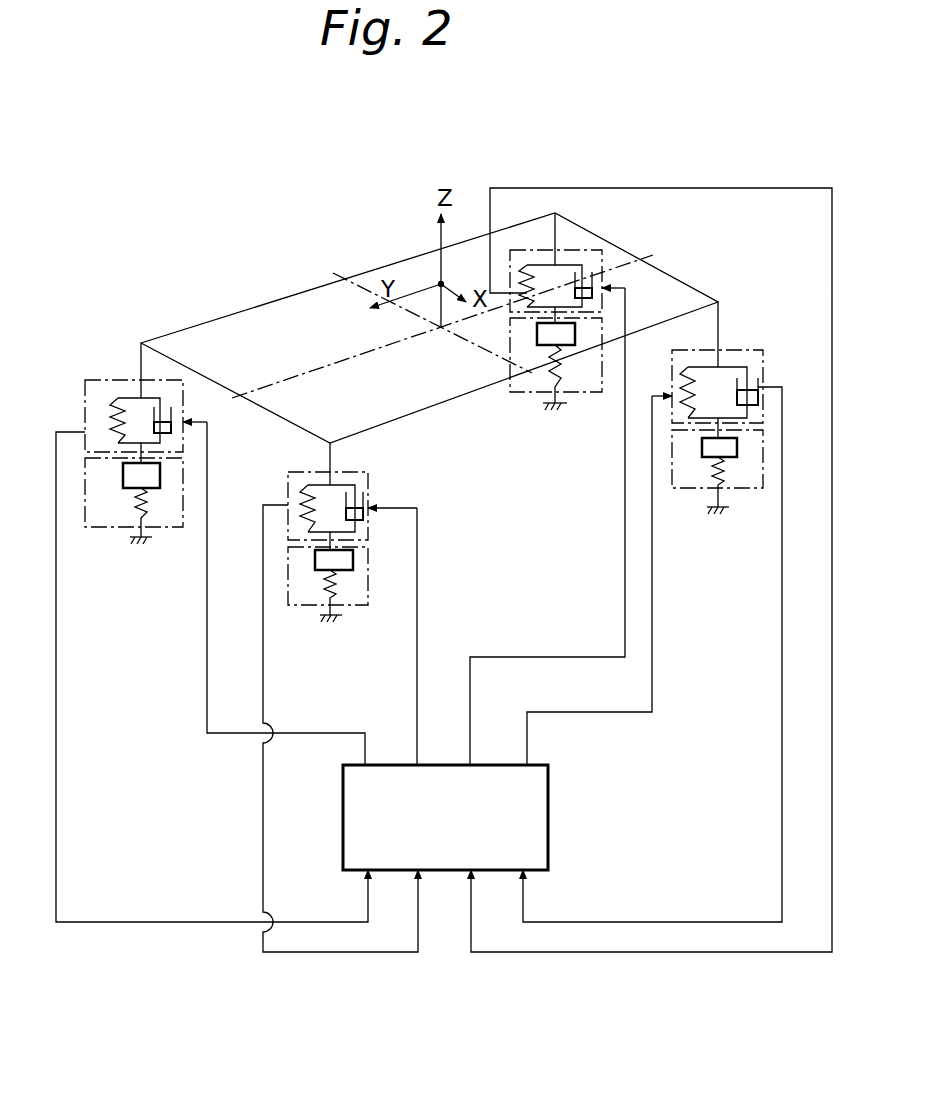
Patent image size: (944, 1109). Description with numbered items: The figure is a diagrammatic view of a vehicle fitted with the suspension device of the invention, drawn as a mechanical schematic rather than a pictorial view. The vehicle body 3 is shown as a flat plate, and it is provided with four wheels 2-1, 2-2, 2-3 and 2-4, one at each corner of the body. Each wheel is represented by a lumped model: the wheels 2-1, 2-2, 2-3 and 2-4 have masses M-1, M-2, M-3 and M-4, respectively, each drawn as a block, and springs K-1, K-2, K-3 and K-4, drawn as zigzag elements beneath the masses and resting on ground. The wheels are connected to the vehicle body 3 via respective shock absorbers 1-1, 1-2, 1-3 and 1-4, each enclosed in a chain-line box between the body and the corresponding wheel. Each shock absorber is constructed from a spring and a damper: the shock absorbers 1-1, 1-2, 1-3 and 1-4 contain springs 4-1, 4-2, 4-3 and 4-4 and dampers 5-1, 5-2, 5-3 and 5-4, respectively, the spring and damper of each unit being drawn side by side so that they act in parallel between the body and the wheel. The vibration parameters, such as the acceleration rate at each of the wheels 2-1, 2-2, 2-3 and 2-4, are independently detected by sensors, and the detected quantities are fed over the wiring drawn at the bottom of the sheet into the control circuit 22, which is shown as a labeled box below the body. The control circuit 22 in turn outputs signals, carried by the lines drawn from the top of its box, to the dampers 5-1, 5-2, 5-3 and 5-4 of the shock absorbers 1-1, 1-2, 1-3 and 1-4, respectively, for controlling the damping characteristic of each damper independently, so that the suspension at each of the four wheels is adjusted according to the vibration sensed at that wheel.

The vehicle body 3 is at (276, 300).
The control circuit 22 is at (548, 812).
The shock absorber 1-1 is at (85, 407).
The shock absorber 1-2 is at (368, 478).
The shock absorber 1-3 is at (588, 250).
The shock absorber 1-4 is at (787, 378).
The wheel 2-1 is at (85, 470).
The wheel 2-2 is at (368, 587).
The wheel 2-3 is at (510, 392).
The wheel 2-4 is at (748, 490).
The spring 4-1 is at (115, 402).
The spring 4-2 is at (303, 507).
The spring 4-3 is at (527, 267).
The spring 4-4 is at (700, 378).
The damper 5-1 is at (172, 433).
The damper 5-2 is at (363, 521).
The damper 5-3 is at (592, 299).
The damper 5-4 is at (758, 404).
The mass M-1 is at (123, 482).
The mass M-2 is at (315, 565).
The mass M-3 is at (575, 337).
The mass M-4 is at (702, 453).
The spring K-1 is at (137, 508).
The spring K-2 is at (330, 592).
The spring K-3 is at (549, 370).
The spring K-4 is at (715, 477).